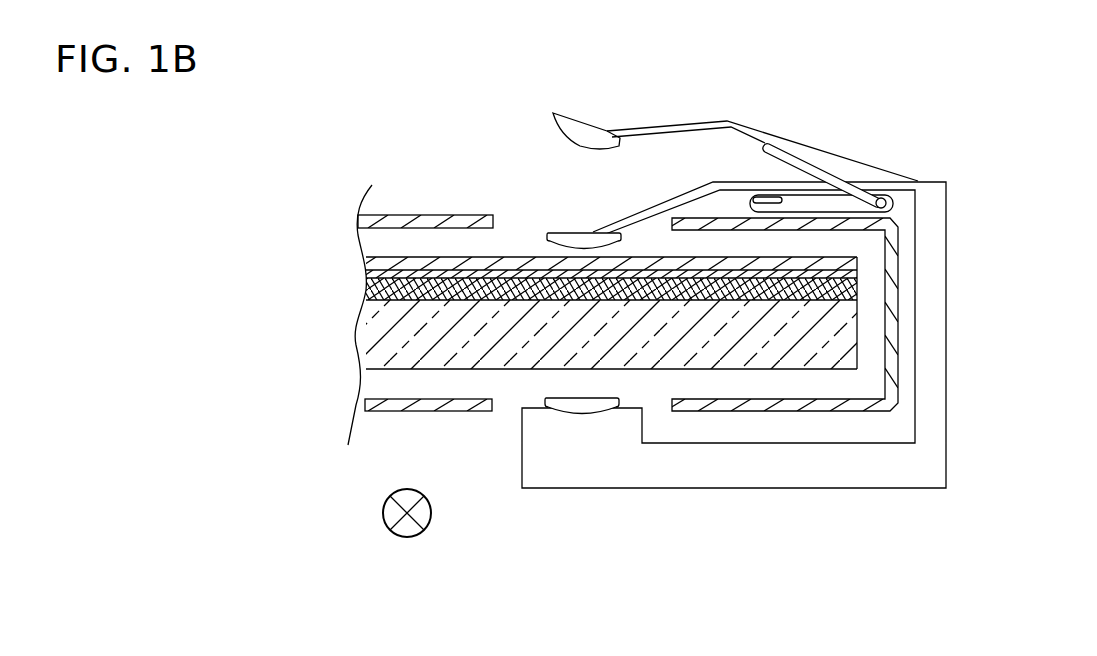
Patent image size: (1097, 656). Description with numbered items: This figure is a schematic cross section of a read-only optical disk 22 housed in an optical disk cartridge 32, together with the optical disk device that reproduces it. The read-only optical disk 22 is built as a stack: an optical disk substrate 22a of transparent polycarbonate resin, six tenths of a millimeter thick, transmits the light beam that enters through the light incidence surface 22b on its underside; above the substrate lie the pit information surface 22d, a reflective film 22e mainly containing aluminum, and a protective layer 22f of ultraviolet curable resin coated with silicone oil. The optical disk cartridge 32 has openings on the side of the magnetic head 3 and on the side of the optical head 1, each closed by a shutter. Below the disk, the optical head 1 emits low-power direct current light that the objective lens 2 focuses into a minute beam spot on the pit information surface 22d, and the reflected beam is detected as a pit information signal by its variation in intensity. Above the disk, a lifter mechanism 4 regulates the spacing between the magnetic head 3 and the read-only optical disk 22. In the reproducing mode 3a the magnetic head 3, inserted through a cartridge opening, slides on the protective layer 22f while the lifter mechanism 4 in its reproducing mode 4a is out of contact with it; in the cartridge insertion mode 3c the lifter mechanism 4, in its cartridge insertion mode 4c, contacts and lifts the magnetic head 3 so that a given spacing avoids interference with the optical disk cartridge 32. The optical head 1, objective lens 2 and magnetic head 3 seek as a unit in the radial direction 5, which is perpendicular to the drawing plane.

The optical head 1 is at (643, 472).
The objective lens 2 is at (577, 413).
The magnetic head 3 is at (495, 163).
The reproducing mode 3a is at (548, 233).
The cartridge insertion mode 3c is at (553, 124).
The lifter mechanism 4 is at (762, 106).
The reproducing mode of the lifter mechanism 4a is at (745, 197).
The cartridge insertion mode of the lifter mechanism 4c is at (763, 142).
The radial direction 5 is at (408, 538).
The read-only optical disk 22 is at (523, 291).
The optical disk substrate 22a is at (385, 323).
The light incidence surface 22b is at (556, 386).
The pit information surface 22d is at (382, 290).
The reflective film 22e is at (366, 275).
The protective layer 22f is at (366, 262).
The optical disk cartridge 32 is at (390, 223).